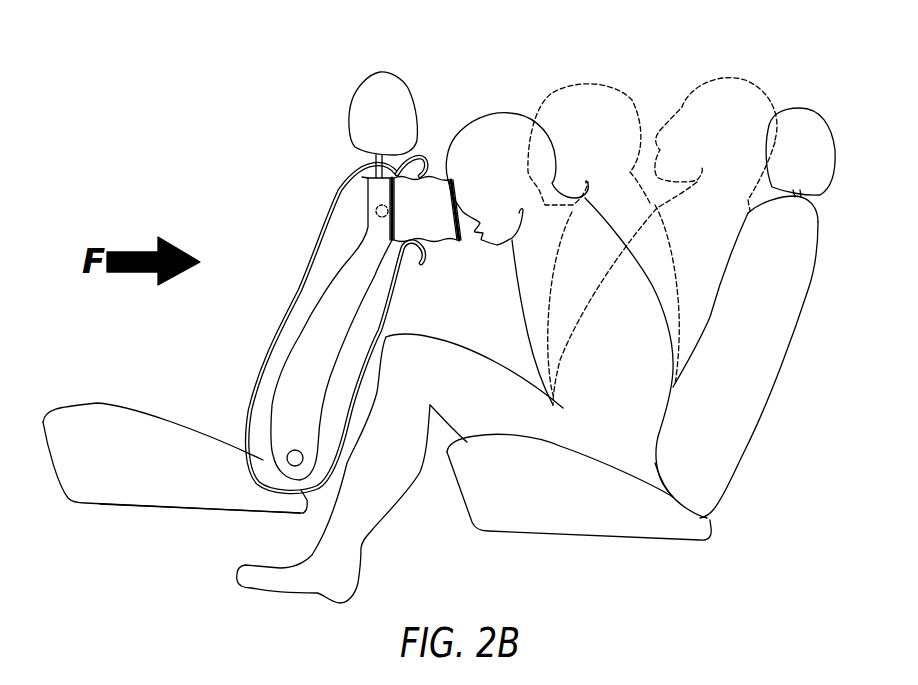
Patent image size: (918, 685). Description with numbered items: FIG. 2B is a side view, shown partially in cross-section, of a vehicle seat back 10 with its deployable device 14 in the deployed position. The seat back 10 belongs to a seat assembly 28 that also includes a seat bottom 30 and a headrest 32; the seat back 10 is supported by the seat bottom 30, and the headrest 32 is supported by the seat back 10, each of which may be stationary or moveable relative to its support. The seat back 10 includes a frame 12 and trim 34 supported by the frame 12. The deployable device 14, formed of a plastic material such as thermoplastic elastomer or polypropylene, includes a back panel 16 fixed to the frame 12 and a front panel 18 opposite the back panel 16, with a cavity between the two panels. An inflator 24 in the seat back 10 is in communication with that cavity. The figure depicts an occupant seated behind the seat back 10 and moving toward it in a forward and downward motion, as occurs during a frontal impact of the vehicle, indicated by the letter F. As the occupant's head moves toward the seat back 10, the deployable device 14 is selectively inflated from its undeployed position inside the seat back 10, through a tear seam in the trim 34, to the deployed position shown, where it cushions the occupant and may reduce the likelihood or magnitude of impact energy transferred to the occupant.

The seat back 10 is at (477, 283).
The frame 12 is at (296, 320).
The deployable device 14 is at (440, 150).
The back panel 16 is at (362, 177).
The front panel 18 is at (460, 244).
The inflator 24 is at (377, 206).
The seat assembly 28 is at (147, 520).
The seat bottom 30 is at (110, 415).
The headrest 32 is at (393, 84).
The trim 34 is at (343, 190).